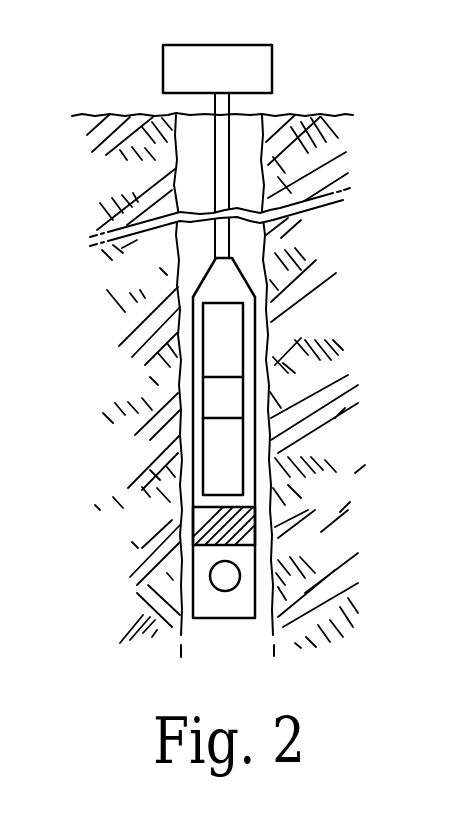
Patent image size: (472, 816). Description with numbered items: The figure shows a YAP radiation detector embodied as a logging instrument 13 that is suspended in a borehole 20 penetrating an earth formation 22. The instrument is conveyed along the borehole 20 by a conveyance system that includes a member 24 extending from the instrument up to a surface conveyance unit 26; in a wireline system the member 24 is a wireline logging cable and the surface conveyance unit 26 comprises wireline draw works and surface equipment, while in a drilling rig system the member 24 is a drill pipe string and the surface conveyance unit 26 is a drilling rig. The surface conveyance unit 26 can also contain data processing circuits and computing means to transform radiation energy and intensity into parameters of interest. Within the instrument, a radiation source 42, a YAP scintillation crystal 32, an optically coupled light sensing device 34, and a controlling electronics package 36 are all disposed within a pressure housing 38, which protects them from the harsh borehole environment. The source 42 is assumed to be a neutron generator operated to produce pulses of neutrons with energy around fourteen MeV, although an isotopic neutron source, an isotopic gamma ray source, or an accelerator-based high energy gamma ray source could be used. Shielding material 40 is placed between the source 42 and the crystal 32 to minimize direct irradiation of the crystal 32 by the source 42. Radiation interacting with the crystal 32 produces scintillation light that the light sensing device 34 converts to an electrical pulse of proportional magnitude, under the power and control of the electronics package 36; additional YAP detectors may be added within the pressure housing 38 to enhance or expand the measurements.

The logging instrument 13 is at (222, 640).
The borehole 20 is at (228, 427).
The earth formation 22 is at (122, 286).
The member 24 is at (215, 150).
The surface conveyance unit 26 is at (272, 72).
The YAP scintillation crystal 32 is at (206, 482).
The light sensing device 34 is at (203, 403).
The electronics package 36 is at (203, 342).
The pressure housing 38 is at (257, 464).
The shielding material 40 is at (250, 518).
The radiation source 42 is at (240, 571).